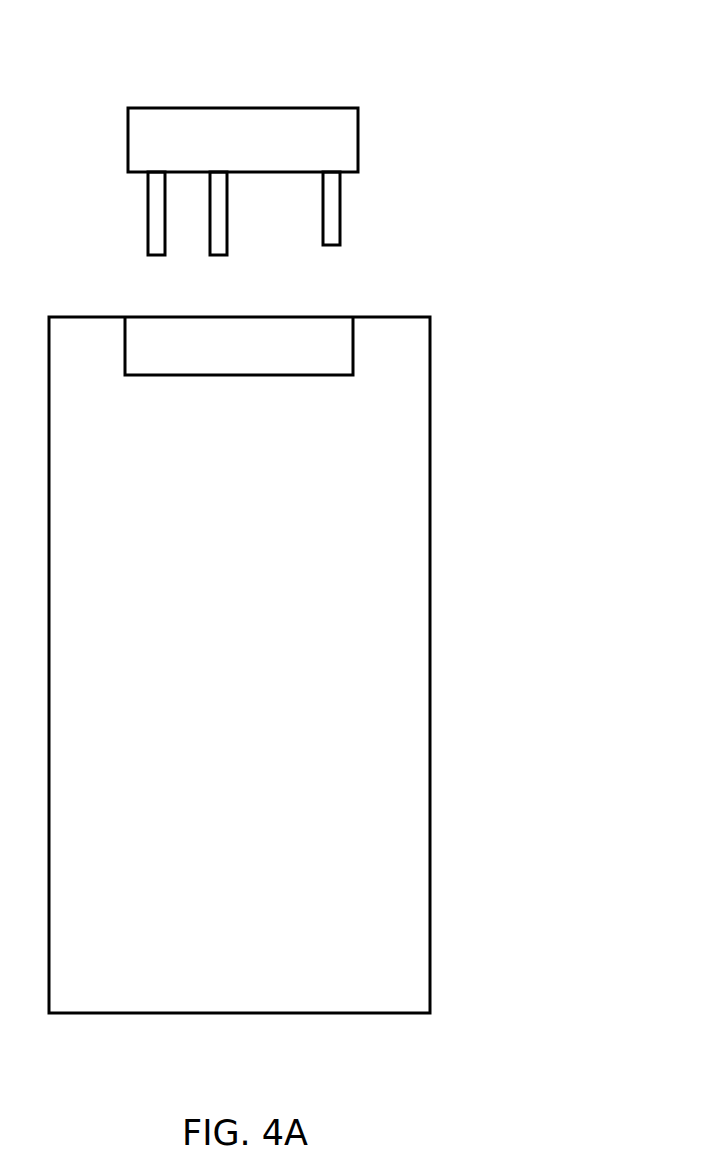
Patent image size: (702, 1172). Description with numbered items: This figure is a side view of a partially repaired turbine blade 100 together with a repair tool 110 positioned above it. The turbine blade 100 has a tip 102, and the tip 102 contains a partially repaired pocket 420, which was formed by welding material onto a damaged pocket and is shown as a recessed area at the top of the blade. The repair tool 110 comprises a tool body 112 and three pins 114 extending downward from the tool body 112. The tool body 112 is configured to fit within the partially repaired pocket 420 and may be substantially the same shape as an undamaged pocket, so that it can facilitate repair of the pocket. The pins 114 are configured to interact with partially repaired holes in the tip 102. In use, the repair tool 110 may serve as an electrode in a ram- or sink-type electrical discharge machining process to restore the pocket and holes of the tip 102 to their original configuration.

The turbine blade 100 is at (314, 634).
The tip 102 is at (403, 317).
The repair tool 110 is at (251, 131).
The tool body 112 is at (343, 135).
The pins 114 is at (340, 212).
The partially repaired pocket 420 is at (298, 317).